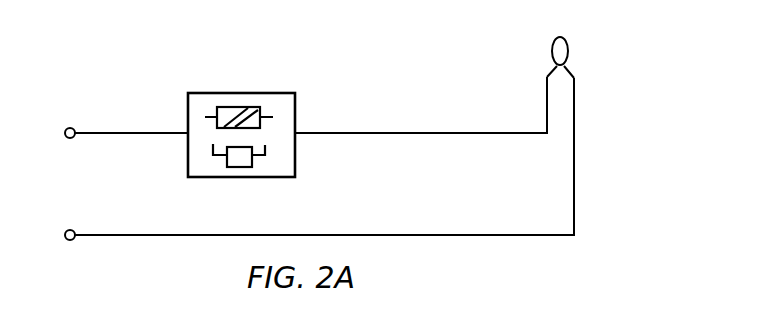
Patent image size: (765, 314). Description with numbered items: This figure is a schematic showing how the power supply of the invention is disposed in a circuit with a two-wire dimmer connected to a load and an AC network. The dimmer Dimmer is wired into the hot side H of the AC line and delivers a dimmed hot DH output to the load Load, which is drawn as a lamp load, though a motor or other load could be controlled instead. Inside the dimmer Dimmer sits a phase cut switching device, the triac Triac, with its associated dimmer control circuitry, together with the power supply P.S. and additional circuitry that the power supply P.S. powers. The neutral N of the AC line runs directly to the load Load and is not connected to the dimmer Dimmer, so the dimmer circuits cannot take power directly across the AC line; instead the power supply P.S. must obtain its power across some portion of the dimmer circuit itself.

The hot side H is at (70, 116).
The neutral N is at (69, 216).
The dimmer Dimmer is at (241, 118).
The triac Triac is at (213, 115).
The power supply P.S. is at (240, 167).
The dimmed hot DH is at (347, 110).
The load Load is at (595, 57).